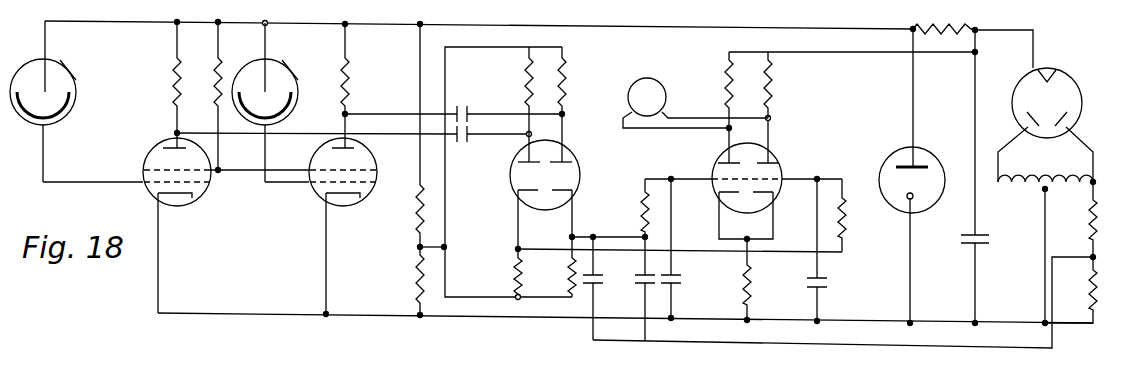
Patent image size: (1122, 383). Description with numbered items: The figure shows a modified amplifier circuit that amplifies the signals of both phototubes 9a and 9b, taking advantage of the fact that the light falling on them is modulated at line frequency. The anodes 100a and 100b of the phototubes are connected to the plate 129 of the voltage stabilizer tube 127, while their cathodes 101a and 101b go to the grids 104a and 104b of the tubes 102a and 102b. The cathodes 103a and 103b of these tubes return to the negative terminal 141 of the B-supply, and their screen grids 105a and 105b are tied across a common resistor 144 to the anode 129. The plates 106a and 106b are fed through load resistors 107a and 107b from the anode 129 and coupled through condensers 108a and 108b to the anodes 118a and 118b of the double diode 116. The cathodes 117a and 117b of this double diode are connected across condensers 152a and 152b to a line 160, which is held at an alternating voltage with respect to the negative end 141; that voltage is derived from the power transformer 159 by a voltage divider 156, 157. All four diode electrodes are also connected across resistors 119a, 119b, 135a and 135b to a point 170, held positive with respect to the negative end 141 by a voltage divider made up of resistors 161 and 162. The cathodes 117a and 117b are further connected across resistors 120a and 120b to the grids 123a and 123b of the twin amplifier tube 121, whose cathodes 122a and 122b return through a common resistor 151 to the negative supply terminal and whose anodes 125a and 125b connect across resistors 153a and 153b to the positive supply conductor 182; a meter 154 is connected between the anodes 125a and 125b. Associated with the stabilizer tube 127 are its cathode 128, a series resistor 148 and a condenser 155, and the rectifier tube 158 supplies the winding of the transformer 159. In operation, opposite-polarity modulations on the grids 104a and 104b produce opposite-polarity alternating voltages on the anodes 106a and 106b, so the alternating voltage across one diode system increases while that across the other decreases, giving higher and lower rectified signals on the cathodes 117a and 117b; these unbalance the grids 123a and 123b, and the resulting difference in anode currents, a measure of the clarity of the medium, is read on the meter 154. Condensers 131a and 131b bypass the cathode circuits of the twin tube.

The anode 100a is at (52, 46).
The anode 100b is at (275, 48).
The phototube 9a is at (78, 80).
The phototube 9b is at (291, 76).
The cathode 101a is at (50, 128).
The cathode 101b is at (284, 126).
The load resistor 107a is at (172, 61).
The load resistor 107b is at (352, 84).
The common resistor 144 is at (220, 60).
The tube 102a is at (203, 198).
The tube 102b is at (340, 210).
The plate 106a is at (172, 135).
The plate 106b is at (358, 147).
The screen grid 105a is at (208, 175).
The screen grid 105b is at (310, 169).
The grid 104a is at (140, 178).
The grid 104b is at (310, 185).
The cathode 103a is at (164, 206).
The cathode 103b is at (320, 200).
The resistor 161 is at (416, 203).
The resistor 162 is at (412, 284).
The point 170 is at (447, 232).
The condenser 108a is at (466, 150).
The condenser 108b is at (464, 108).
The resistor 119a is at (527, 74).
The resistor 119b is at (568, 67).
The double diode 116 is at (562, 212).
The anode 118a is at (521, 158).
The anode 118b is at (572, 153).
The cathode 117a is at (514, 192).
The cathode 117b is at (576, 193).
The resistor 135a is at (516, 276).
The resistor 135b is at (570, 276).
The resistor 120a is at (848, 210).
The resistor 120b is at (643, 224).
The condenser 152a is at (645, 286).
The condenser 152b is at (598, 282).
The line 160 is at (889, 340).
The negative terminal 141 is at (1015, 327).
The twin amplifier tube 121 is at (758, 216).
The grid 123a is at (782, 180).
The grid 123b is at (712, 174).
The cathode 122a is at (817, 204).
The cathode 122b is at (672, 194).
The condenser 131a is at (822, 287).
The condenser 131b is at (680, 279).
The common resistor 151 is at (732, 288).
The anode 125a is at (772, 159).
The anode 125b is at (727, 156).
The resistor 153a is at (773, 78).
The resistor 153b is at (724, 74).
The supply conductor 182 is at (978, 50).
The meter 154 is at (624, 97).
The voltage stabilizer tube 127 is at (882, 163).
The plate 129 is at (920, 140).
The cathode 128 is at (912, 207).
The resistor 148 is at (960, 34).
The condenser 155 is at (978, 242).
The rectifier tube 158 is at (1014, 84).
The power transformer 159 is at (1050, 168).
The voltage divider resistor 156 is at (1090, 224).
The voltage divider resistor 157 is at (1082, 297).